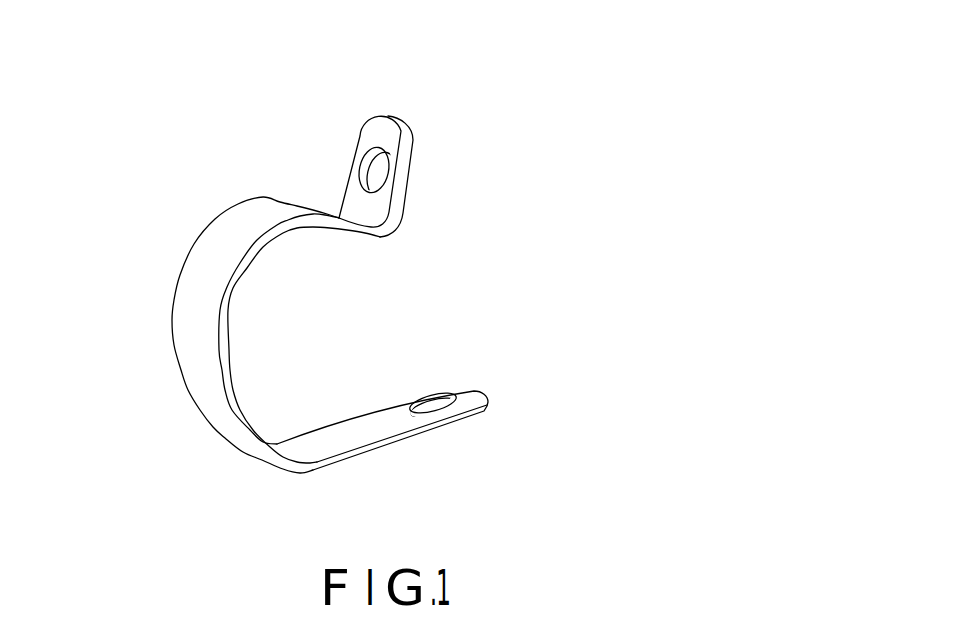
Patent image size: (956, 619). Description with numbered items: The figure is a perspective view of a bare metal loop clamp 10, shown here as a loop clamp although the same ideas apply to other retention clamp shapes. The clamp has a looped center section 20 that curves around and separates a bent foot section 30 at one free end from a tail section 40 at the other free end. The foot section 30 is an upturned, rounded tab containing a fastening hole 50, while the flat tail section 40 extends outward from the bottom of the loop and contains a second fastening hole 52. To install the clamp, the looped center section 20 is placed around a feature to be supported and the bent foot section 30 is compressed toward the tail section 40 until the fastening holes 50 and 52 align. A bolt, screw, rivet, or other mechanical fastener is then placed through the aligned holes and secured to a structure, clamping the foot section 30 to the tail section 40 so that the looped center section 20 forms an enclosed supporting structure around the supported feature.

The bare metal loop clamp 10 is at (520, 107).
The looped center section 20 is at (192, 331).
The bent foot section 30 is at (368, 128).
The tail section 40 is at (388, 423).
The fastening hole 50 is at (375, 189).
The fastening hole 52 is at (415, 398).